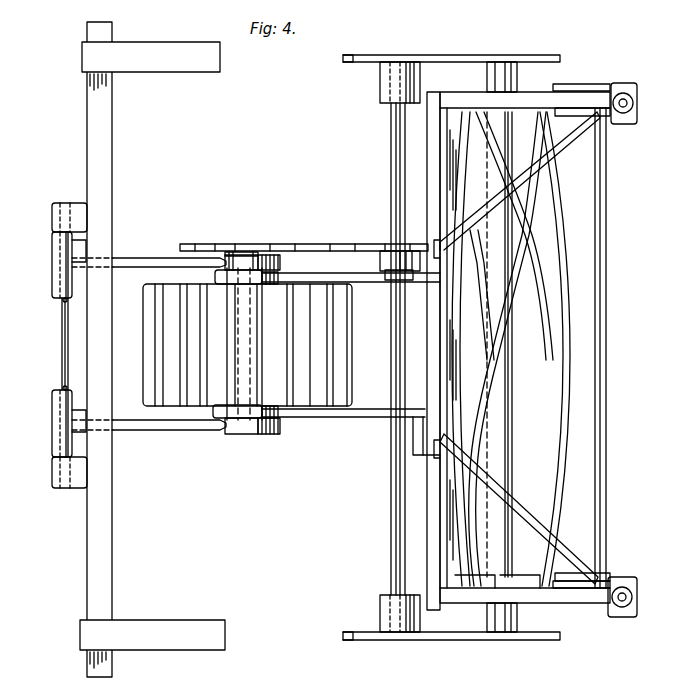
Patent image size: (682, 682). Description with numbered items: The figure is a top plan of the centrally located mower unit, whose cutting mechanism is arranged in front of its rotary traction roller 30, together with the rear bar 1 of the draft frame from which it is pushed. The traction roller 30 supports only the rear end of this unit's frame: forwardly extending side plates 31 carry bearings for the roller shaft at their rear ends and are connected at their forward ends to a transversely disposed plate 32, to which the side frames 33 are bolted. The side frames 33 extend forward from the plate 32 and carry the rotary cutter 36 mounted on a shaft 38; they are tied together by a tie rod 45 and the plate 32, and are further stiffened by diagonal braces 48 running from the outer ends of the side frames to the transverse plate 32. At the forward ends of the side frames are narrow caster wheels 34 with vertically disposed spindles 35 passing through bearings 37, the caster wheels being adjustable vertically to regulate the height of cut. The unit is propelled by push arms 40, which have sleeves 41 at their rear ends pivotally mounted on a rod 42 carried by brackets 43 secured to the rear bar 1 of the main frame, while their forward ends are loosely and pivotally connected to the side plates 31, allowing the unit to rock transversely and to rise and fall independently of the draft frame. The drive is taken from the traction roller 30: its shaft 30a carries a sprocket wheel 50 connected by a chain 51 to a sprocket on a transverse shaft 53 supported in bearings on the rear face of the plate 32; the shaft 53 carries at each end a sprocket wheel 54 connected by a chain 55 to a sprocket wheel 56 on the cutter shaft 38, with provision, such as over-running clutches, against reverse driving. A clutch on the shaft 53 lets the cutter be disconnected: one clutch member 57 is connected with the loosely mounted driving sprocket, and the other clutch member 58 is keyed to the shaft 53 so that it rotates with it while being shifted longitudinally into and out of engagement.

The bars 1 is at (108, 150).
The traction roller 30 is at (148, 360).
The shaft 30a is at (250, 252).
The side plates 31 is at (378, 282).
The transverse plate 32 is at (430, 522).
The side frames 33 is at (590, 92).
The caster wheels 34 is at (600, 84).
The spindles 35 is at (640, 110).
The rotary cutter 36 is at (548, 378).
The bearings 37 is at (634, 100).
The shaft 38 is at (514, 465).
The push arms 40 is at (138, 263).
The sleeves 41 is at (56, 263).
The rod 42 is at (60, 343).
The brackets 43 is at (60, 470).
The tie rod 45 is at (608, 300).
The diagonal braces 48 is at (540, 165).
The sprocket wheel 50 is at (212, 250).
The chain 51 is at (320, 252).
The transverse shaft 53 is at (390, 157).
The sprocket wheel 54 is at (348, 64).
The chain 55 is at (478, 55).
The sprocket wheel 56 is at (545, 58).
The clutch member 57 is at (378, 242).
The clutch member 58 is at (395, 282).